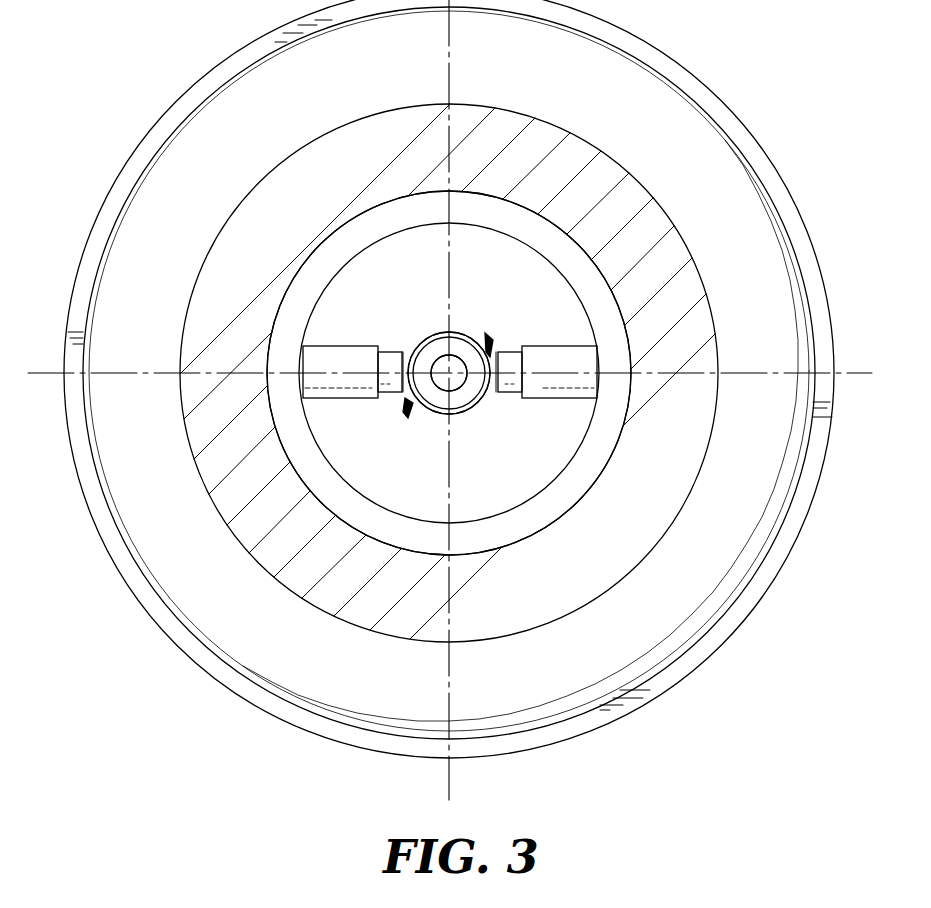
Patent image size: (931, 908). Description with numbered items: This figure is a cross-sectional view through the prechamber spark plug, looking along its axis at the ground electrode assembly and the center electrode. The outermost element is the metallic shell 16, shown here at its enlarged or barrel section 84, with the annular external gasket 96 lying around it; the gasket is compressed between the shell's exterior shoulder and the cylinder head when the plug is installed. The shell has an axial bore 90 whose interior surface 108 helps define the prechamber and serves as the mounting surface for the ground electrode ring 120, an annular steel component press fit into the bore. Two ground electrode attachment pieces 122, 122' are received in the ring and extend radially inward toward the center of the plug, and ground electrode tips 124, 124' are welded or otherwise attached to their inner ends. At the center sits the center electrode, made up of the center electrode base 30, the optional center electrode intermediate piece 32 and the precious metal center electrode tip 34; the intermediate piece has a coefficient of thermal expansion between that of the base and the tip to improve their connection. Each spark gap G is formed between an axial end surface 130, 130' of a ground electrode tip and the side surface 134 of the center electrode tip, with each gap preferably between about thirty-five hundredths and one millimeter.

The enlarged section 84 is at (752, 143).
The annular external gasket 96 is at (682, 103).
The metallic shell 16 is at (652, 250).
The axial bore 90 is at (310, 520).
The interior surface 108 is at (449, 373).
The ground electrode ring 120 is at (302, 428).
The ground electrode attachment piece 122 is at (340, 349).
The ground electrode tip 124 is at (397, 346).
The ground electrode attachment piece 122' is at (552, 338).
The ground electrode tip 124' is at (516, 351).
The axial end surface 130 is at (406, 319).
The axial end surface 130' is at (535, 399).
The center electrode intermediate piece 32 is at (432, 412).
The center electrode tip 34 is at (451, 366).
The center electrode base 30 is at (463, 417).
The side surface 134 is at (463, 385).
The spark gap G is at (488, 333).